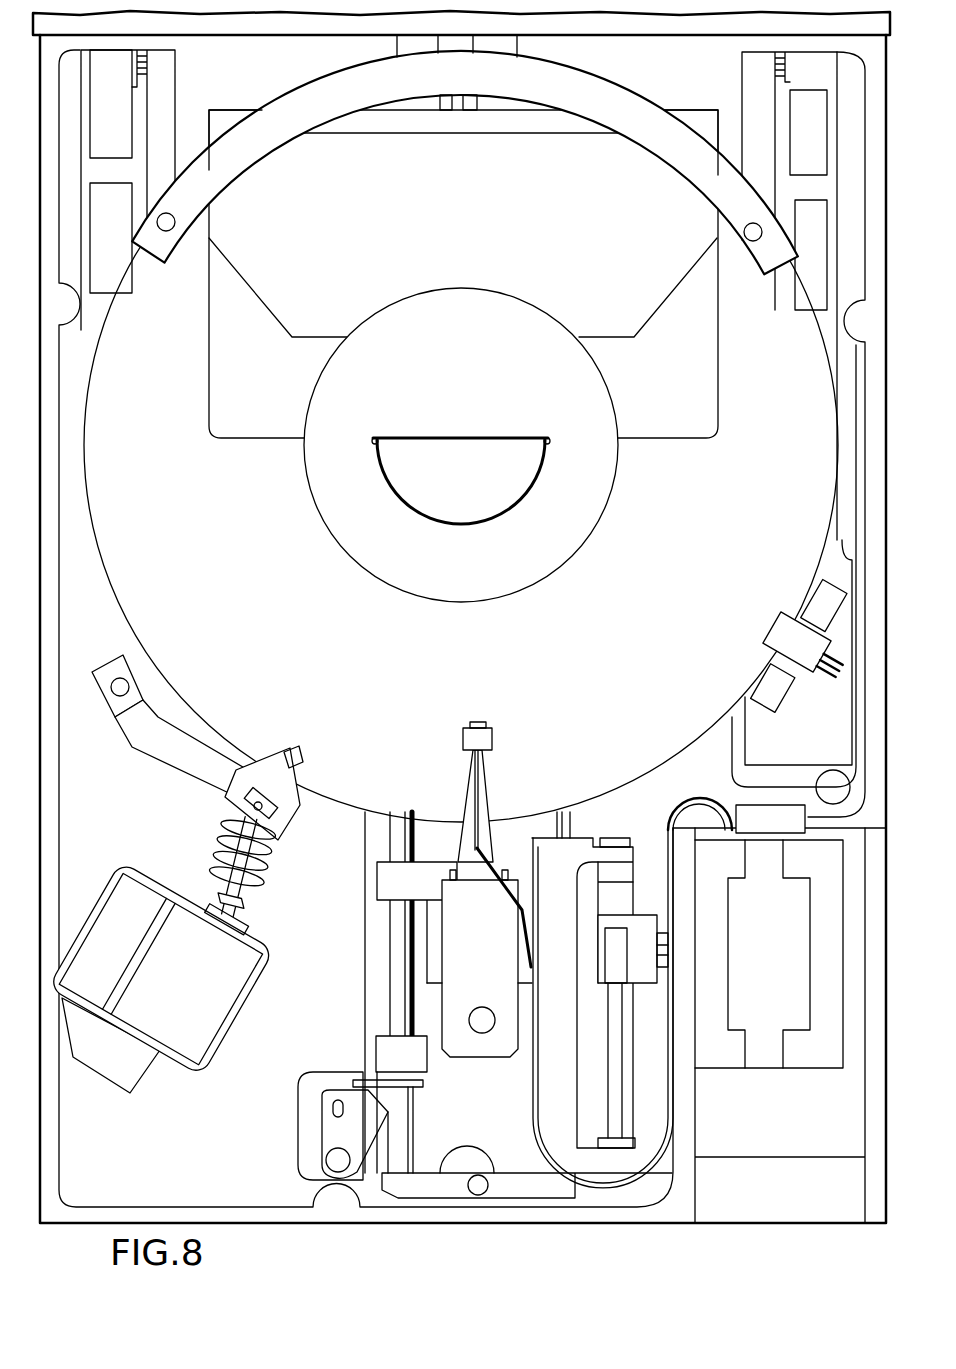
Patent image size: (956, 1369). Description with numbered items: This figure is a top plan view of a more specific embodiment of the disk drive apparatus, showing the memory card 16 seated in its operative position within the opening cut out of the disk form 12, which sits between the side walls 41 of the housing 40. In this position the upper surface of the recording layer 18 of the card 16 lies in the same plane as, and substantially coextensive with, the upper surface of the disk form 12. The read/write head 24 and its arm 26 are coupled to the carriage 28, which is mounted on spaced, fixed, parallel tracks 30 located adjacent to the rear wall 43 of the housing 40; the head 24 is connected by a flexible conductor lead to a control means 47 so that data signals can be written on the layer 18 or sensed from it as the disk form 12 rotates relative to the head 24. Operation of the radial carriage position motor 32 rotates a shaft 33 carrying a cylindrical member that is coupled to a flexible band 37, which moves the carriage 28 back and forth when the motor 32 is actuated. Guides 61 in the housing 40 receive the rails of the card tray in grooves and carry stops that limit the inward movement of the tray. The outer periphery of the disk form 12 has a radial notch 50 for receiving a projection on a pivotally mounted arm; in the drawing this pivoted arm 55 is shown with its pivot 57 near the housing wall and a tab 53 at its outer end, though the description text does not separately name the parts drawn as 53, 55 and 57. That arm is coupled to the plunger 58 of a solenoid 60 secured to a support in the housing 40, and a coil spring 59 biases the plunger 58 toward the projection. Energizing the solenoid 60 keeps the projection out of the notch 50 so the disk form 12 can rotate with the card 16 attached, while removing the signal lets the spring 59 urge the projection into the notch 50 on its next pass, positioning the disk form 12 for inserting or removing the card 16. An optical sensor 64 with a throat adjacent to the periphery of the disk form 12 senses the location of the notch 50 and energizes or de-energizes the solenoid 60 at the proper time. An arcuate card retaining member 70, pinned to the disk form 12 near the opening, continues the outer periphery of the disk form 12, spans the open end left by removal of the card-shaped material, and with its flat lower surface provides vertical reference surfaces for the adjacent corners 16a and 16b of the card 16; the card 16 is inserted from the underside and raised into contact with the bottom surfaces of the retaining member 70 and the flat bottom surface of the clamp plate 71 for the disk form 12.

The disk form 12 is at (466, 445).
The memory card 16 is at (683, 447).
The corner of card 16a is at (222, 118).
The corner of card 16b is at (698, 120).
The layer 18 is at (651, 302).
The read/write head 24 is at (493, 740).
The arm 26 is at (490, 808).
The carriage 28 is at (388, 890).
The tracks 30 is at (398, 1000).
The radial carriage position motor 32 is at (795, 1070).
The shaft 33 is at (665, 935).
The flexible band 37 is at (618, 1037).
The housing 40 is at (463, 1232).
The side walls 41 is at (55, 528).
The rear wall 43 is at (185, 1215).
The control means 47 is at (750, 813).
The radial notch 50 is at (272, 762).
The tab 53 is at (290, 770).
The lever arm 55 is at (200, 717).
The pivot 57 is at (128, 678).
The plunger 58 is at (250, 877).
The coil spring 59 is at (215, 858).
The solenoid 60 is at (245, 993).
The guides 61 is at (665, 1160).
The optical sensor 64 is at (770, 628).
The arcuate card retaining member 70 is at (312, 120).
The clamp plate 71 is at (530, 328).